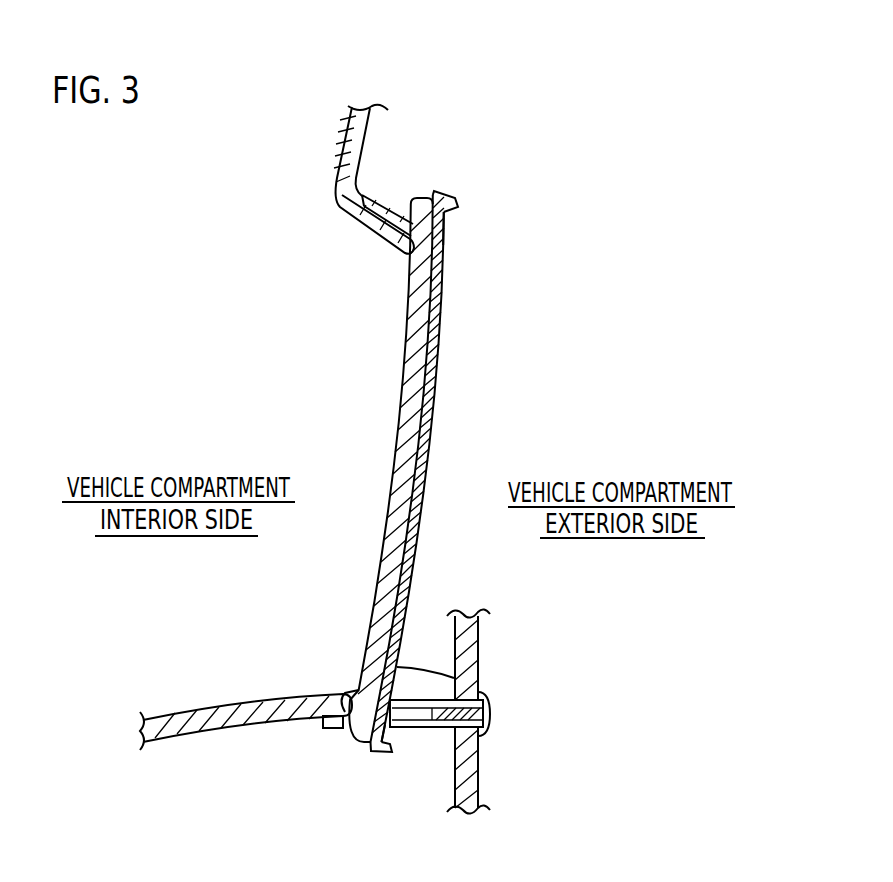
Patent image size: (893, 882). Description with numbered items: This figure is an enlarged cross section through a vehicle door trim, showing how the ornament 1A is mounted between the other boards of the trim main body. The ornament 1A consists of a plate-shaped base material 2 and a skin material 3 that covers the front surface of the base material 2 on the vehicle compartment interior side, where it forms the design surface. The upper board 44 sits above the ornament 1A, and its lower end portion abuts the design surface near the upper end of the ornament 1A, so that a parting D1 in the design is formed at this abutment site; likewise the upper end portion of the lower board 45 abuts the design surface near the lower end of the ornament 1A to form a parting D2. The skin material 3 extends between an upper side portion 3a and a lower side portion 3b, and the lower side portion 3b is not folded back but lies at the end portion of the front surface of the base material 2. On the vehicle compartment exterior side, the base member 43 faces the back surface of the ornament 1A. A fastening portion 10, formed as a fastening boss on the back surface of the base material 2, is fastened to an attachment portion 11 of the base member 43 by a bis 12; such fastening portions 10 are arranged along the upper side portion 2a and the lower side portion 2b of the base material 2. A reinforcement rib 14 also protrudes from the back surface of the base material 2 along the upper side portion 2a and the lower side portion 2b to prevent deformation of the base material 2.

The ornament 1A is at (380, 351).
The base material 2 is at (441, 358).
The upper side portion 2a is at (458, 215).
The lower side portion 2b is at (392, 753).
The skin material 3 is at (398, 420).
The upper side portion 3a is at (411, 206).
The lower side portion 3b is at (345, 742).
The fastening portion 10 is at (432, 728).
The attachment portion 11 is at (480, 748).
The bis 12 is at (488, 712).
The reinforcement rib 14 is at (451, 195).
The base member 43 is at (480, 648).
The upper board 44 is at (342, 228).
The lower board 45 is at (306, 683).
The parting D1 is at (402, 271).
The parting D2 is at (352, 671).